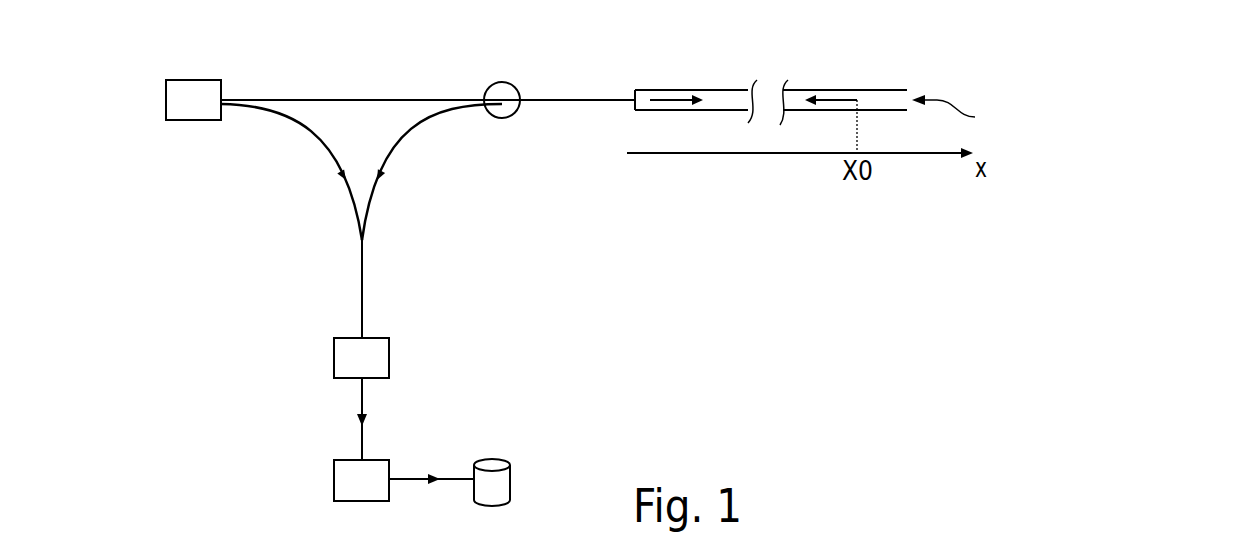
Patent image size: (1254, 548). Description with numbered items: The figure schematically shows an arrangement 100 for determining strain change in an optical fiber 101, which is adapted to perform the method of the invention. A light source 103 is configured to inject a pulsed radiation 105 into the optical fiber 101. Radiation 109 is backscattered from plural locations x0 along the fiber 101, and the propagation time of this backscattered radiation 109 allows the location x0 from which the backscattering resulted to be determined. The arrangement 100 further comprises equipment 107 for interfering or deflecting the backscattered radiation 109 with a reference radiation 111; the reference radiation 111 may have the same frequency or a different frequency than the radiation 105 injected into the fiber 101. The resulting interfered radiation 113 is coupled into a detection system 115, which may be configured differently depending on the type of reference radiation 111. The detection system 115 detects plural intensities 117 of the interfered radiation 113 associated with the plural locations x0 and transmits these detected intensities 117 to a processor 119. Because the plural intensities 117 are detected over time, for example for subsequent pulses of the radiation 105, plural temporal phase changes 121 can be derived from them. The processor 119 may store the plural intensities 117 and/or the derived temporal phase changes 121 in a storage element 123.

The arrangement 100 is at (622, 302).
The optical fiber 101 is at (962, 114).
The light source 103 is at (190, 80).
The pulsed radiation 105 is at (669, 99).
The equipment 107 is at (500, 82).
The backscattered radiation 109 is at (386, 172).
The reference radiation 111 is at (338, 172).
The interfered radiation 113 is at (362, 295).
The detection system 115 is at (389, 355).
The plural intensities 117 is at (362, 403).
The processor 119 is at (334, 478).
The plural temporal phase changes 121 is at (431, 467).
The storage element 123 is at (510, 483).